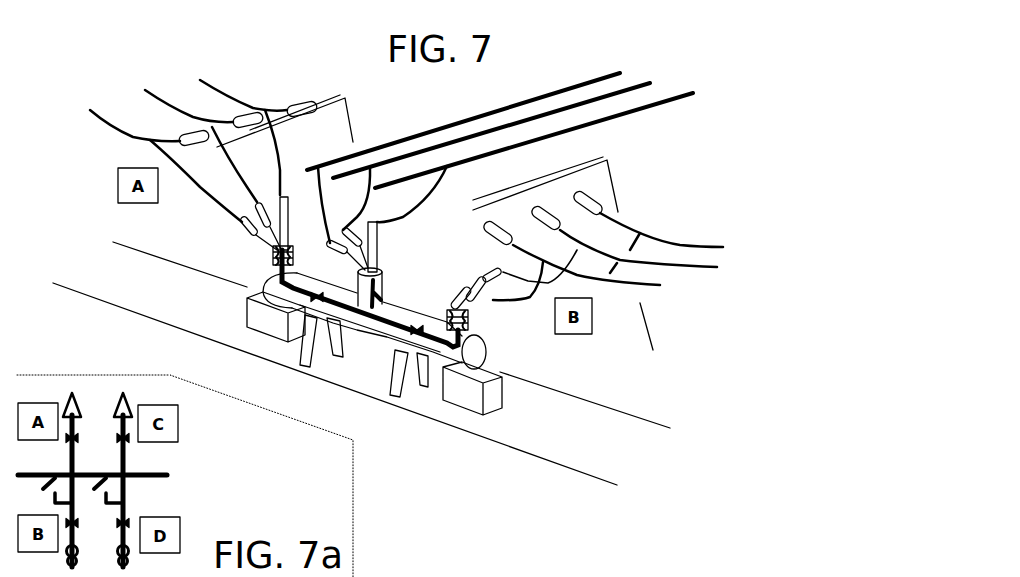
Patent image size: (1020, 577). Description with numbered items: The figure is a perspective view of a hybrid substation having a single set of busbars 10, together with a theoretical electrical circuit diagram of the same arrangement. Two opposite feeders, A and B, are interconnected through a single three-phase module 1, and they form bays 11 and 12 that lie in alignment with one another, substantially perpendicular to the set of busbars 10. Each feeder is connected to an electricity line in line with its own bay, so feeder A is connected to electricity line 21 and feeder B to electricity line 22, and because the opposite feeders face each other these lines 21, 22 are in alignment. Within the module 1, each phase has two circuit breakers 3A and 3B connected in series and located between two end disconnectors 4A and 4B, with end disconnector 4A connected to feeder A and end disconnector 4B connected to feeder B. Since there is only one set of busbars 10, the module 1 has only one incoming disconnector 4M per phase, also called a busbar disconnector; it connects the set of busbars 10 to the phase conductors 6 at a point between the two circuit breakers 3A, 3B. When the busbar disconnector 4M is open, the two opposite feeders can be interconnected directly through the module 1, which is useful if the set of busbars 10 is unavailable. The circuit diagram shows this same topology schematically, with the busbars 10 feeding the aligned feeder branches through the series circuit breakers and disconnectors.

In FIG. 7, the three-phase module 1 is at (433, 370).
In FIG. 7, the circuit breaker 3A is at (316, 301).
In FIG. 7, the circuit breaker 3B is at (413, 337).
In FIG. 7, the end disconnector 4A is at (273, 263).
In FIG. 7, the end disconnector 4B is at (470, 329).
In FIG. 7, the incoming disconnector 4M is at (374, 273).
In FIG. 7, the phase conductors 6 is at (373, 323).
In FIG. 7, the set of busbars 10 is at (620, 63).
In FIG. 7A, the set of busbars 10 is at (173, 474).
In FIG. 7, the bay 11 is at (160, 288).
In FIG. 7, the bay 12 is at (587, 439).
In FIG. 7, the electricity line 21 is at (203, 63).
In FIG. 7, the electricity line 22 is at (757, 257).